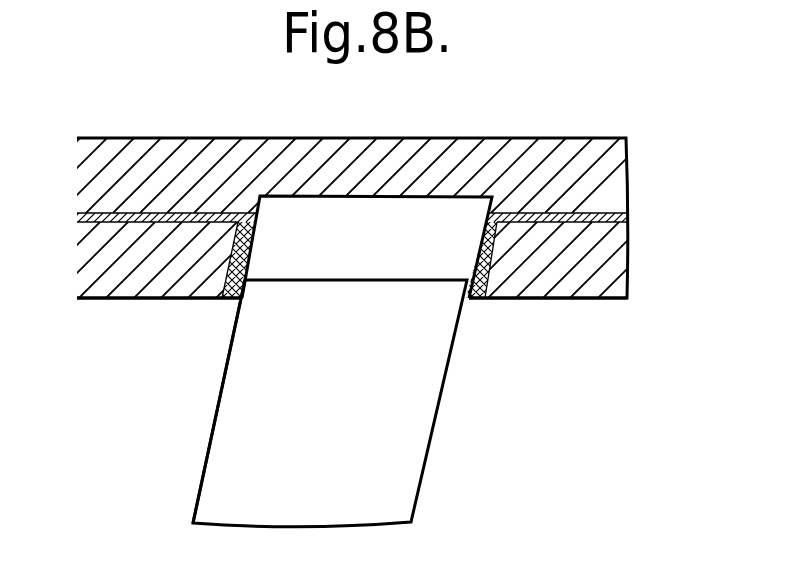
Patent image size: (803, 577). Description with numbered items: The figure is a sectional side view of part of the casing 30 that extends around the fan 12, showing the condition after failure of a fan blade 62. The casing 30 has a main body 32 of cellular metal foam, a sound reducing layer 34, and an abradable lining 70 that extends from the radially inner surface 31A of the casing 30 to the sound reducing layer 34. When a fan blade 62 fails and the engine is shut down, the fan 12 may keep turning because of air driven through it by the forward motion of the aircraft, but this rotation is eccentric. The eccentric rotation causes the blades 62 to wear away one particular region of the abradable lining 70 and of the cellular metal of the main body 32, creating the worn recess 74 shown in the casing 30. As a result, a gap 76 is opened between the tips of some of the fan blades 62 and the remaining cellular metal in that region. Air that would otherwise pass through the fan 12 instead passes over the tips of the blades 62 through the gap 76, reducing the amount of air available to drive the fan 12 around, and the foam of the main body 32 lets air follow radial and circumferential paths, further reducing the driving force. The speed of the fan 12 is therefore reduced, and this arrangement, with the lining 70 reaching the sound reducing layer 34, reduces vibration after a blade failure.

The fan 12 is at (395, 473).
The casing 30 is at (100, 330).
The radially inner surface 31A is at (532, 298).
The main body 32 is at (612, 172).
The sound reducing layer 34 is at (518, 213).
The fan blade 62 is at (228, 463).
The abradable lining 70 is at (233, 295).
The worn recess 74 is at (479, 248).
The gap 76 is at (327, 213).